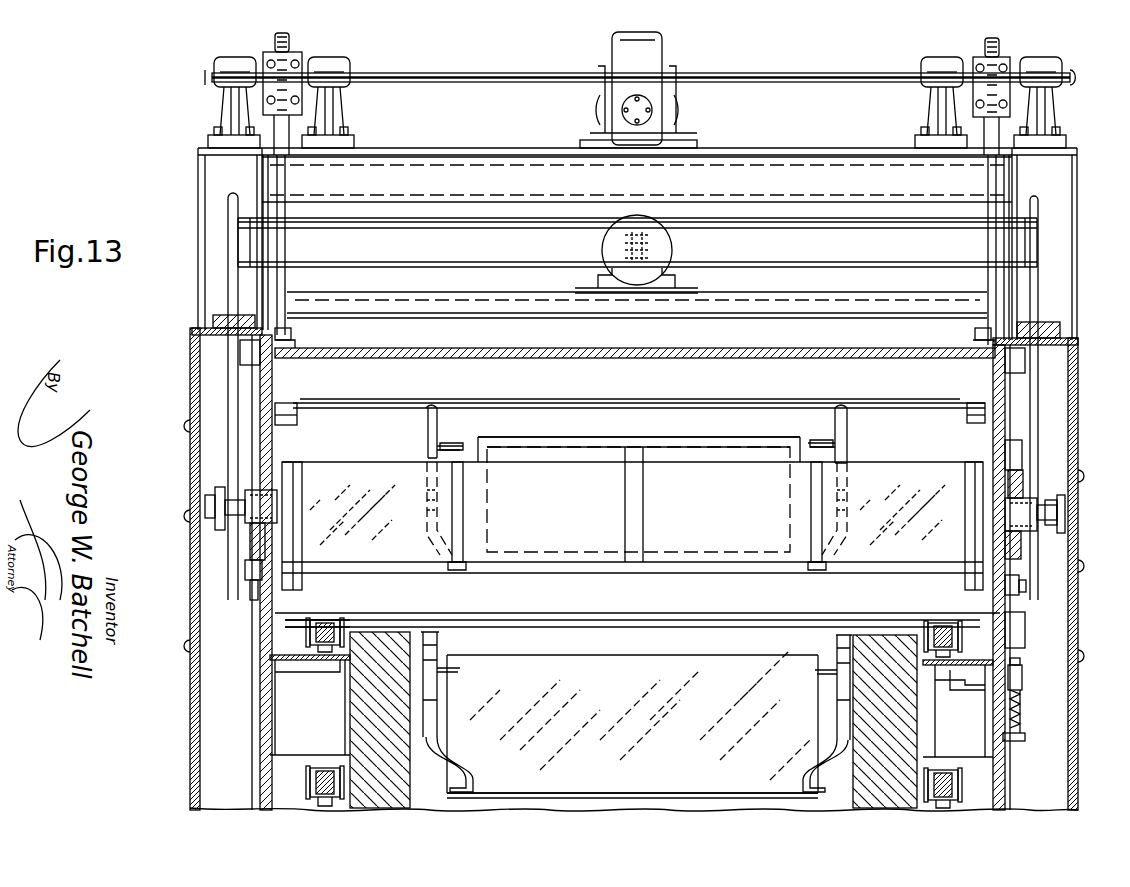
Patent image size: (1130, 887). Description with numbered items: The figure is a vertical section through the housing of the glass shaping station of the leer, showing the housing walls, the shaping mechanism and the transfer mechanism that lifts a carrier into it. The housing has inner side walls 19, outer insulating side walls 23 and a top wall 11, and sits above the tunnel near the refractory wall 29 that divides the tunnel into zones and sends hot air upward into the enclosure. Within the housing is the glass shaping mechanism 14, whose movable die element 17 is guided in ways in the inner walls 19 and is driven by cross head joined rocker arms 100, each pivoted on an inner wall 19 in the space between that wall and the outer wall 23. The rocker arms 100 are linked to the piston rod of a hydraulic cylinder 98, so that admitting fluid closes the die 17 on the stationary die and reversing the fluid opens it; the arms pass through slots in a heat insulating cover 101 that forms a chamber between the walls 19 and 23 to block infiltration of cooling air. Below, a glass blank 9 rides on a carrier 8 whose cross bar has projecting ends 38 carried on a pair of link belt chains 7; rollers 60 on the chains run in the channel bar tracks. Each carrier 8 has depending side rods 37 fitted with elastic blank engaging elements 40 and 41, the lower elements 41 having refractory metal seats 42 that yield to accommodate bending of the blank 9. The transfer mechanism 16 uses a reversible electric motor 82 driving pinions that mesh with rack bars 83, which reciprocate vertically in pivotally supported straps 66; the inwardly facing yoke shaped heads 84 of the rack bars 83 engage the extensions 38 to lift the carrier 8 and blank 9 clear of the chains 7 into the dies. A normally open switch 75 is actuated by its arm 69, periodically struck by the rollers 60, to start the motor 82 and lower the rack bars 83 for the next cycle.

The link belt chain 7 is at (345, 625).
The blank supporting carrier 8 is at (407, 402).
The glass blank 9 is at (600, 660).
The top wall 11 is at (650, 350).
The glass shaping mechanism 14 is at (572, 477).
The transfer mechanism 16 is at (803, 85).
The die element 17 is at (677, 453).
The inner side wall 19 is at (250, 452).
The outer insulating side wall 23 is at (192, 490).
The wall 29 is at (520, 800).
The side rod 37 is at (430, 426).
The projecting end 38 is at (823, 405).
The upper blank engaging element 40 is at (420, 448).
The lower blank engaging element 41 is at (427, 545).
The seat 42 is at (463, 567).
The roller 60 is at (326, 630).
The pivotally supported strap 66 is at (300, 98).
The switch arm 69 is at (962, 673).
The normally open switch 75 is at (1017, 620).
The reversible electric motor 82 is at (672, 107).
The rack bar 83 is at (282, 327).
The head 84 is at (296, 420).
The cylinder 98 is at (643, 277).
The rocker arm 100 is at (232, 355).
The heat insulating cover 101 is at (225, 320).